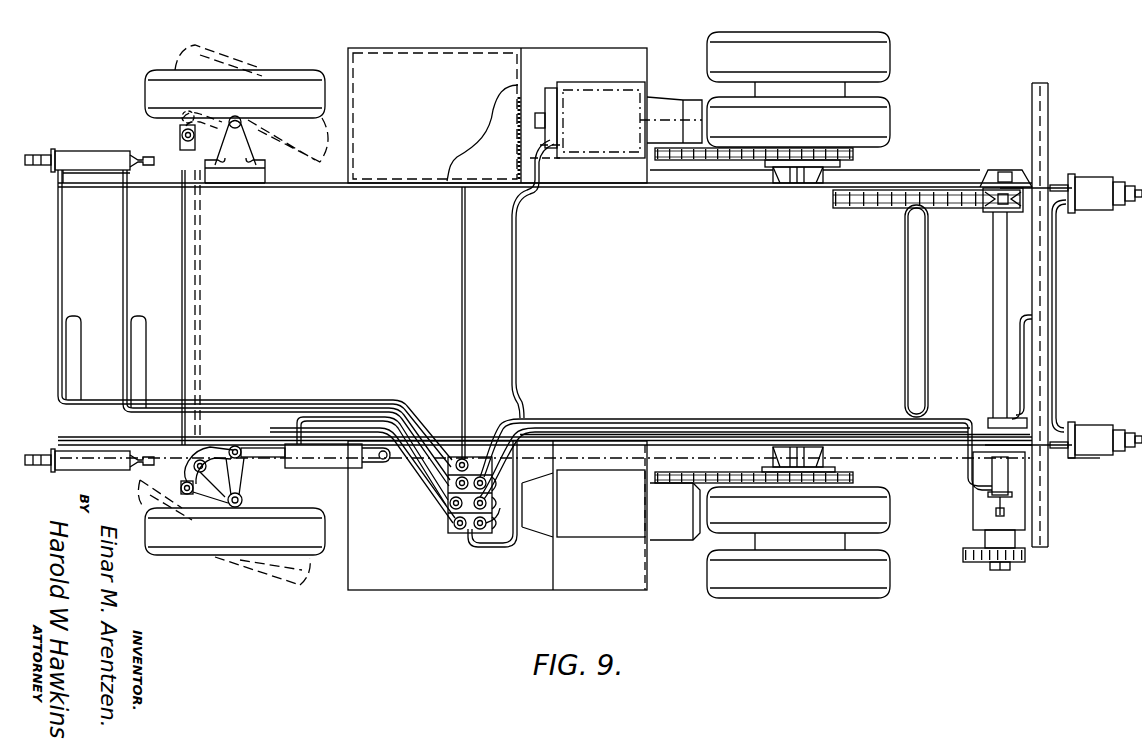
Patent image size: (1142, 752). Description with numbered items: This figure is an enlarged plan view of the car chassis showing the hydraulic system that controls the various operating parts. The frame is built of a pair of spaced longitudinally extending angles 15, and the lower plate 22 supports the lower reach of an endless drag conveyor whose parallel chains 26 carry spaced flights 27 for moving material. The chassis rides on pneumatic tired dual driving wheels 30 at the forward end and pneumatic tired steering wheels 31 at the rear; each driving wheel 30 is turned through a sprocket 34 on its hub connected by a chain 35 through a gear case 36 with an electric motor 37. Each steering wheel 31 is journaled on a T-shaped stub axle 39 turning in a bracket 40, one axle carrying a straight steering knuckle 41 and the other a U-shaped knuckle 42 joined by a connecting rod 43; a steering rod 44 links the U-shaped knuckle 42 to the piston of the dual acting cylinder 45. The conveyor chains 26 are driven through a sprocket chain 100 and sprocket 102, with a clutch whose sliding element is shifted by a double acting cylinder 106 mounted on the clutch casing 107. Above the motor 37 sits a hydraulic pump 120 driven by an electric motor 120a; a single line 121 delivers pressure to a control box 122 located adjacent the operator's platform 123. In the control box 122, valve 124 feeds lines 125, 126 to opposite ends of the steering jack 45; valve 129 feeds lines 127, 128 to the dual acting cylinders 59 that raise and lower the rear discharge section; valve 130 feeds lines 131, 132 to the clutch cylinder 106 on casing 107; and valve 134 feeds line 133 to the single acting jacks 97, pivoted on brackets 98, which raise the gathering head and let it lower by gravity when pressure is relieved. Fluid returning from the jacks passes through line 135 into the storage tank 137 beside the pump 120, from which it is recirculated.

The angle 15 is at (768, 186).
The lower plate 22 is at (816, 368).
The chain 26 is at (873, 202).
The flight 27 is at (922, 253).
The driving wheel 30 is at (803, 43).
The steering wheel 31 is at (250, 82).
The sprocket 34 is at (848, 157).
The chain 35 is at (712, 160).
The gear case 36 is at (688, 107).
The electric motor 37 is at (597, 533).
The stub axle 39 is at (243, 500).
The bracket 40 is at (238, 173).
The steering knuckle 41 is at (182, 137).
The U-shaped knuckle 42 is at (203, 493).
The connecting rod 43 is at (192, 369).
The steering rod 44 is at (268, 455).
The cylinder 45 is at (357, 462).
The cylinder 59 is at (78, 157).
The hydraulic cylinder 97 is at (1097, 208).
The bracket 98 is at (1047, 188).
The sprocket chain 100 is at (970, 553).
The sprocket 102 is at (1000, 564).
The hydraulic cylinder 106 is at (997, 478).
The clutch casing 107 is at (980, 517).
The hydraulic pump 120 is at (551, 88).
The electric motor 120a is at (591, 88).
The line 121 is at (513, 383).
The control box 122 is at (399, 533).
The operator's platform 123 is at (415, 583).
The valve 124 is at (455, 529).
The line 125 is at (418, 472).
The line 126 is at (347, 418).
The line 127 is at (233, 400).
The line 128 is at (312, 407).
The valve 129 is at (508, 548).
The valve 130 is at (490, 490).
The line 131 is at (662, 432).
The line 132 is at (620, 427).
The line 133 is at (557, 420).
The valve 134 is at (457, 463).
The line 135 is at (463, 380).
The storage tank 137 is at (472, 165).